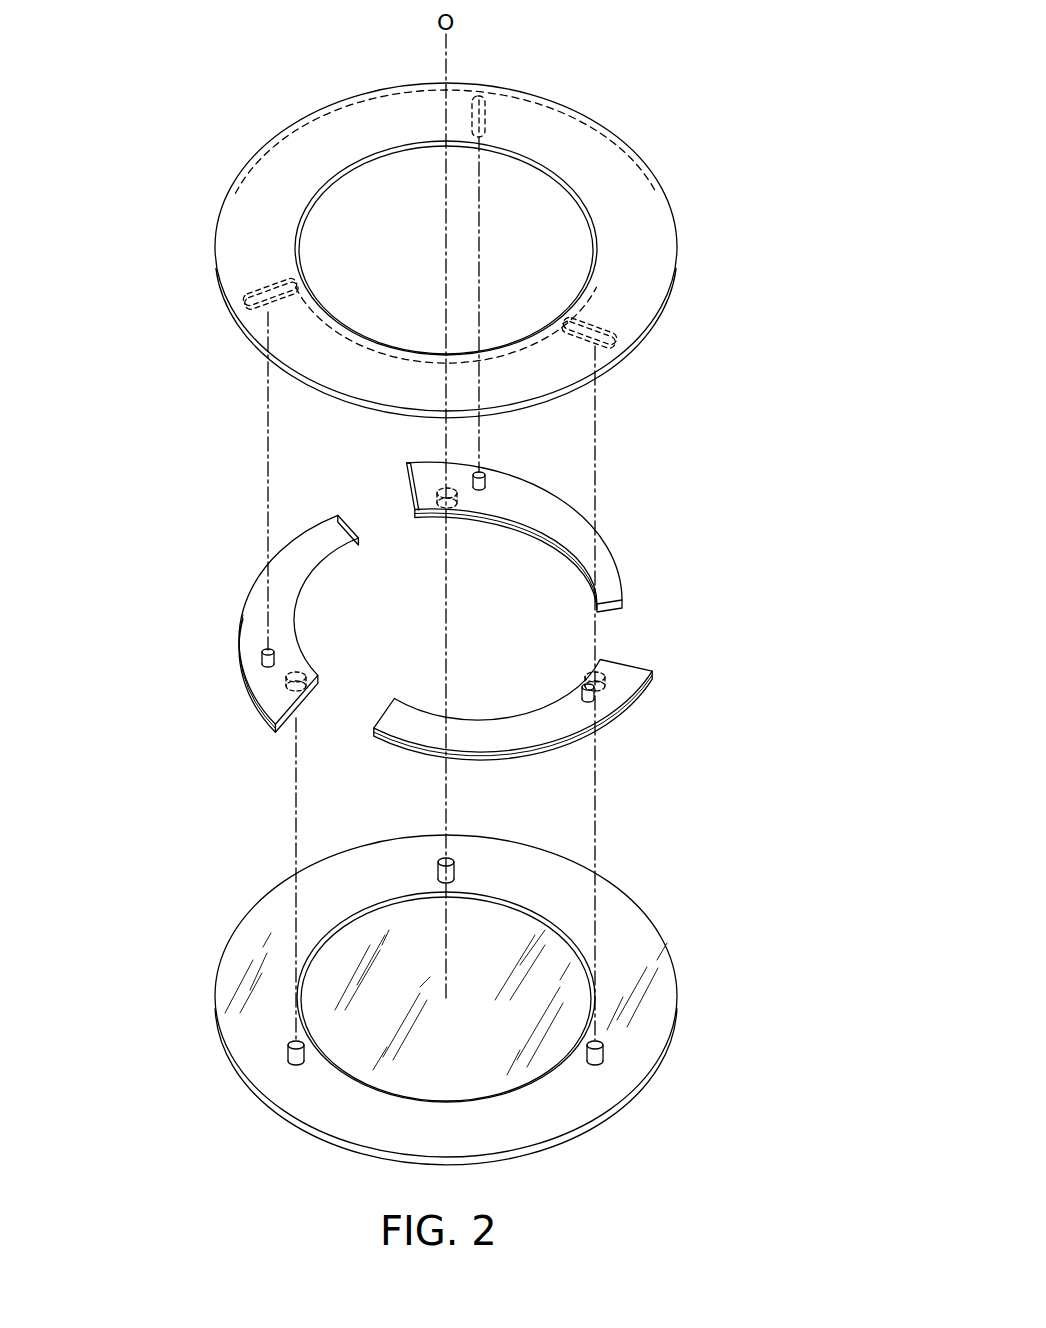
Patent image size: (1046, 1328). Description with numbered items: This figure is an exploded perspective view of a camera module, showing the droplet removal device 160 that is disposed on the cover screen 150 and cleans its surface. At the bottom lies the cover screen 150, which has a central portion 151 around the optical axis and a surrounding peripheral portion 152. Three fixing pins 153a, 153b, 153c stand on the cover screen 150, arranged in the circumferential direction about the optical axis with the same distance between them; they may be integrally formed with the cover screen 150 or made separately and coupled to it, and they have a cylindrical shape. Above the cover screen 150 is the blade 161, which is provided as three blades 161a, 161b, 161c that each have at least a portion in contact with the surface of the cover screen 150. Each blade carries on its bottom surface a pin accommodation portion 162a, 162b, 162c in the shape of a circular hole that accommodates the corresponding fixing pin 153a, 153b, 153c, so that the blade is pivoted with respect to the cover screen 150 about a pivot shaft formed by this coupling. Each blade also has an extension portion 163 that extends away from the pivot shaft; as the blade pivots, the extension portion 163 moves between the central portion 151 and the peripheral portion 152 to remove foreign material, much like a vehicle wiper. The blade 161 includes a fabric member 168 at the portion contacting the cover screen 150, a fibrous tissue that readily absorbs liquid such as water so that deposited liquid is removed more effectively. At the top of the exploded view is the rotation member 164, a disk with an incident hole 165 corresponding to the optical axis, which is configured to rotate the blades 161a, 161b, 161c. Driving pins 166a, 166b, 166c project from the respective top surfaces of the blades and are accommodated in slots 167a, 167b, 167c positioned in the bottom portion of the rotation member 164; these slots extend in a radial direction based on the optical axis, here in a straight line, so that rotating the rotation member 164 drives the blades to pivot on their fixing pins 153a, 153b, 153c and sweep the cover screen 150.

The cover screen 150 is at (210, 940).
The central portion 151 is at (493, 1075).
The peripheral portion 152 is at (628, 942).
The fixing pin 153a is at (288, 1056).
The fixing pin 153b is at (605, 1058).
The fixing pin 153c is at (510, 810).
The droplet removal device 160 is at (112, 132).
The blade 161 is at (822, 876).
The blade 161a is at (250, 625).
The blade 161b is at (615, 565).
The blade 161c is at (630, 705).
The pin accommodation portion 162a is at (280, 695).
The pin accommodation portion 162b is at (608, 668).
The pin accommodation portion 162c is at (440, 492).
The extension portion 163 is at (417, 727).
The rotation member 164 is at (280, 104).
The incident hole 165 is at (520, 214).
The driving pin 166a is at (262, 660).
The driving pin 166b is at (590, 703).
The driving pin 166c is at (485, 482).
The slot 167a is at (250, 287).
The slot 167b is at (620, 328).
The slot 167c is at (488, 118).
The fabric member 168 is at (503, 530).